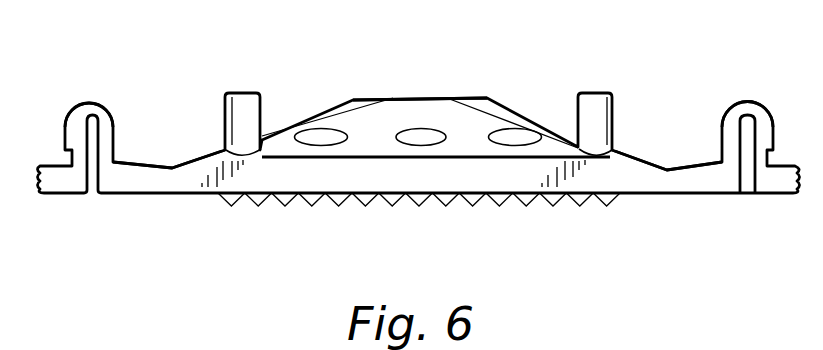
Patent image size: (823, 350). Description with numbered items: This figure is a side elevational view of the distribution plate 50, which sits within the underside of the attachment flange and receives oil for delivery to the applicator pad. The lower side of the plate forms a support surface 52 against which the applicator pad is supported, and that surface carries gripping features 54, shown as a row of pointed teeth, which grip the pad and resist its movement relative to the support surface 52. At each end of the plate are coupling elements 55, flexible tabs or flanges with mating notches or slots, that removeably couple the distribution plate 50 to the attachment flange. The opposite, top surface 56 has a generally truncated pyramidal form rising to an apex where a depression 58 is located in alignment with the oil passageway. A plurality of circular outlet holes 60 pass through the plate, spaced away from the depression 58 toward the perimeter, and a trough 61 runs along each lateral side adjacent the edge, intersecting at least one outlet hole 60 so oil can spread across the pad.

The distribution plate 50 is at (670, 193).
The support surface 52 is at (197, 205).
The gripping features 54 is at (397, 203).
The coupling elements 55 is at (68, 104).
The top surface 56 is at (510, 126).
The depression 58 is at (418, 92).
The outlet holes 60 is at (333, 129).
The trough 61 is at (172, 167).